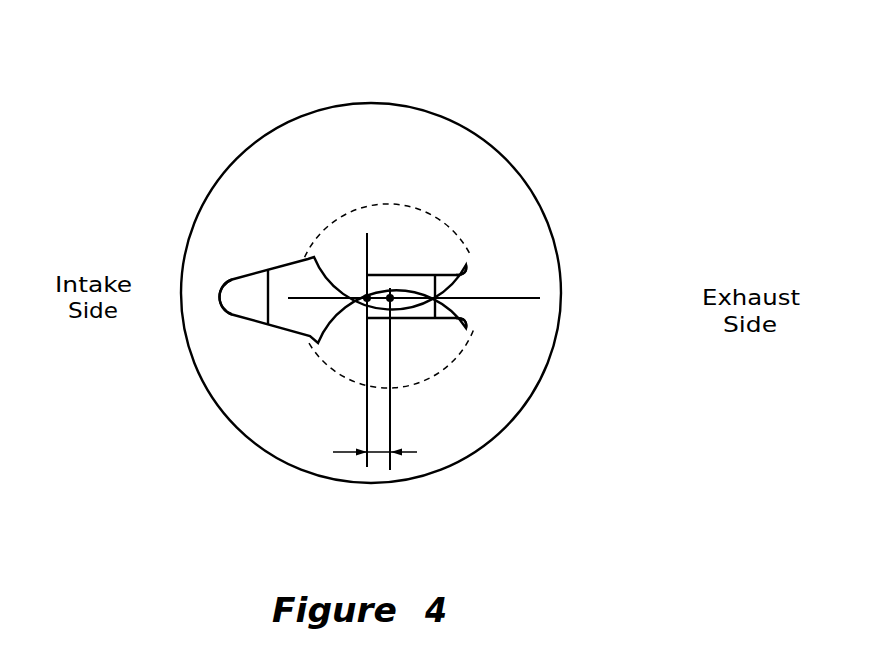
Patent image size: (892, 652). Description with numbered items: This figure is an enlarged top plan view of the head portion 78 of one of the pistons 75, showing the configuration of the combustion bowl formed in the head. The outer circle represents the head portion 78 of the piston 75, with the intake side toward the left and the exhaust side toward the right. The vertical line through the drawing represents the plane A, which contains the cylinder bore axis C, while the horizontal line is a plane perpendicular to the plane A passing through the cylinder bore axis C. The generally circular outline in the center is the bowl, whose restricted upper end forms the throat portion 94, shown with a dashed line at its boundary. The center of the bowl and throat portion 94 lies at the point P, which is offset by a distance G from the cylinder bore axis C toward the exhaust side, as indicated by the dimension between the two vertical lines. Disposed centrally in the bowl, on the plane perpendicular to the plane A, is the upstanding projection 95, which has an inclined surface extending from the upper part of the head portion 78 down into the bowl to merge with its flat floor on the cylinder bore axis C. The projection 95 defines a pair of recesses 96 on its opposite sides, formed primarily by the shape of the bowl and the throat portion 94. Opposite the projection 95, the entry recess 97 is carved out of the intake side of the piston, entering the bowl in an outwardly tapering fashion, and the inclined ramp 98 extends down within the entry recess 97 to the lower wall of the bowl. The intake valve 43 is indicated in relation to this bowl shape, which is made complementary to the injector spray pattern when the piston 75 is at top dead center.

The piston 75 is at (445, 81).
The head portion 78 is at (495, 163).
The intake valve 43 is at (349, 237).
The upstanding projection 95 is at (409, 280).
The recesses 96 is at (438, 260).
The entry recess 97 is at (272, 272).
The inclined ramp 98 is at (243, 288).
The throat portion 94 is at (430, 366).
The center point of bowl and throat P is at (392, 299).
The cylinder bore axis C is at (324, 347).
The plane A is at (368, 416).
The offset distance G is at (382, 452).